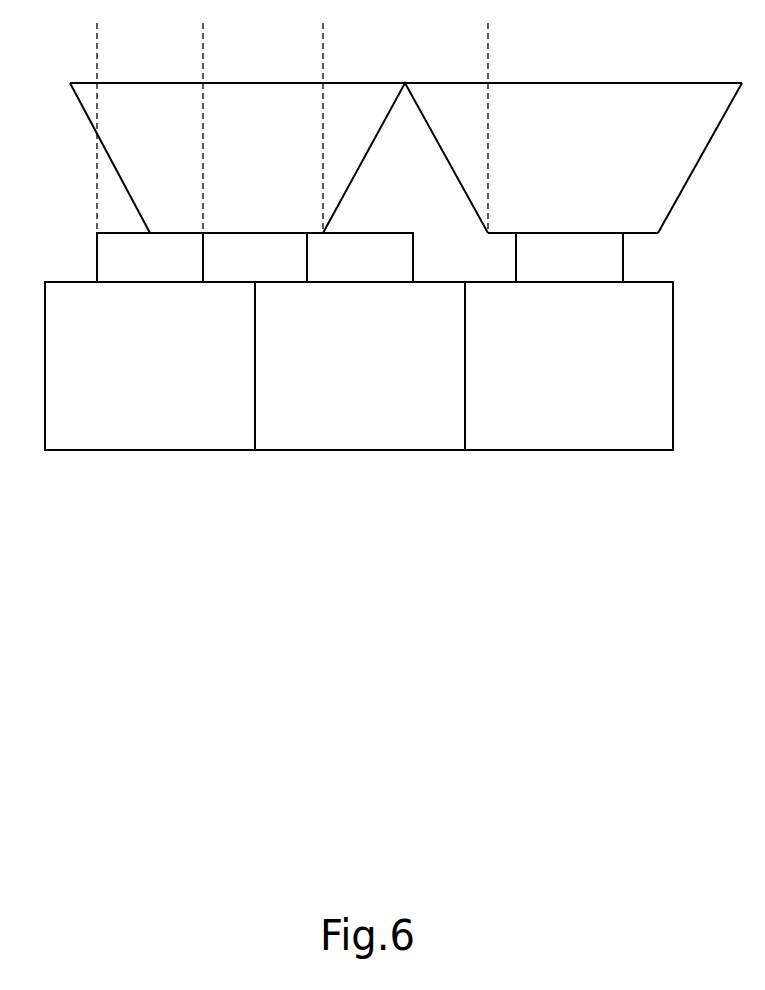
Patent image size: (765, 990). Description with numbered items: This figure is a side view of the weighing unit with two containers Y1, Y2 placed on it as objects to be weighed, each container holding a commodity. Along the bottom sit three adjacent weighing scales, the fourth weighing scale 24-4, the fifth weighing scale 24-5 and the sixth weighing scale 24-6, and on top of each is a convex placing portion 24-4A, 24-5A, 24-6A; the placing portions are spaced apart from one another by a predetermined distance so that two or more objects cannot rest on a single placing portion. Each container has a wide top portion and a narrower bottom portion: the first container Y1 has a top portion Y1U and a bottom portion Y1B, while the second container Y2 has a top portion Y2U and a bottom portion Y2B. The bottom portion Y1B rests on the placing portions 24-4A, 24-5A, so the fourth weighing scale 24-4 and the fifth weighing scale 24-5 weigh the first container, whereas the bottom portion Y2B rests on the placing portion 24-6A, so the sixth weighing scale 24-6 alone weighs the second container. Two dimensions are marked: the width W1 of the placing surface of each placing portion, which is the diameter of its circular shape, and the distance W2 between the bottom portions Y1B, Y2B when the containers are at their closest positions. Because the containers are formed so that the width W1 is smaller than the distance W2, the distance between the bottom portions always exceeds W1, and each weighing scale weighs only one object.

The width of the placing surface W1 is at (202, 38).
The distance between the bottom portions W2 is at (487, 36).
The top portion of container Y1 Y1U is at (83, 81).
The container Y1 is at (266, 81).
The container Y2 is at (571, 81).
The top portion of container Y2 Y2U is at (721, 81).
The bottom portion of container Y1 Y1B is at (251, 234).
The bottom portion of container Y2 Y2B is at (641, 235).
The placing portion 24-4A is at (96, 240).
The placing portion 24-5A is at (384, 232).
The placing portion 24-6A is at (625, 264).
The fourth weighing scale 24-4 is at (145, 452).
The fifth weighing scale 24-5 is at (355, 452).
The sixth weighing scale 24-6 is at (572, 452).